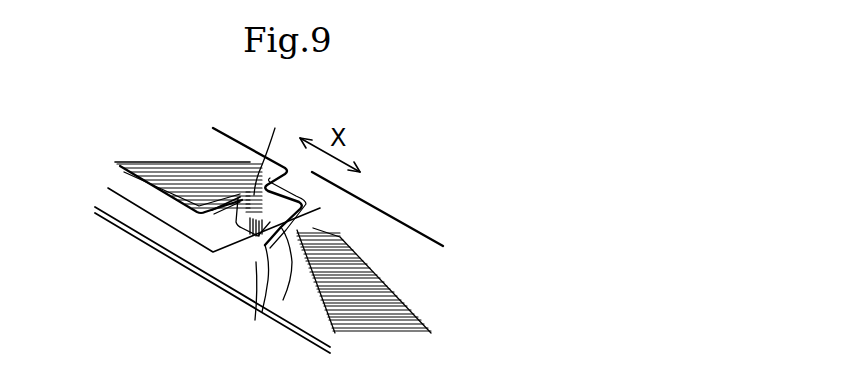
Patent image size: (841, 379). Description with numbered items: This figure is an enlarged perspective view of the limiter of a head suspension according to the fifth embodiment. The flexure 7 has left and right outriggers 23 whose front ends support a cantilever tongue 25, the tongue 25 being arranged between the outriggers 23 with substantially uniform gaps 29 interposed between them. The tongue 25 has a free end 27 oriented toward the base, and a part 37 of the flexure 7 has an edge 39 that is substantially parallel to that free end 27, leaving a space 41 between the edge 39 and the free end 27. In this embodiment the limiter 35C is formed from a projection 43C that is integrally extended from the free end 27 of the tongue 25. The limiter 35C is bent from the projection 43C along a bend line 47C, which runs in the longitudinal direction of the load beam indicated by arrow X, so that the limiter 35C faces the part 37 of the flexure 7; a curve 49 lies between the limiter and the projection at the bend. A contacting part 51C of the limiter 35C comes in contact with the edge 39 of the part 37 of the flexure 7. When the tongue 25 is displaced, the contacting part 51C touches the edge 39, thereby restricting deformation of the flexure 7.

The flexure 7 is at (403, 242).
The outriggers 23 is at (138, 228).
The tongue 25 is at (203, 157).
The free end 27 is at (222, 195).
The gaps 29 is at (98, 212).
The limiter 35C is at (252, 236).
The part of the flexure 37 is at (330, 236).
The edge 39 is at (305, 238).
The space 41 is at (227, 240).
The projection 43C is at (262, 160).
The bend line 47C is at (249, 192).
The curve 49 is at (257, 262).
The contacting part 51C is at (266, 282).